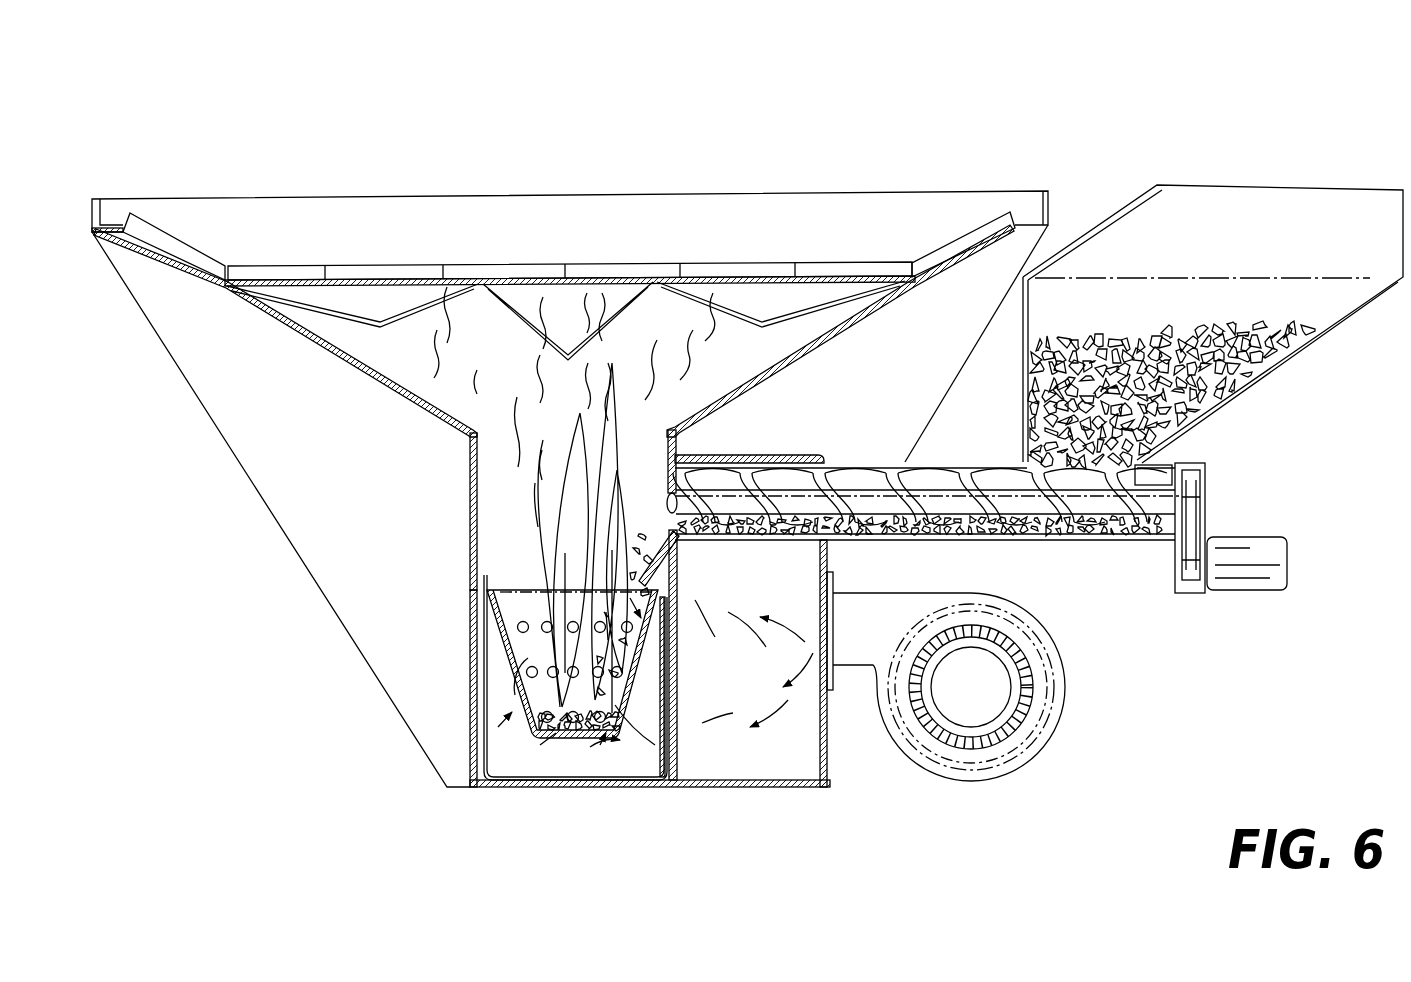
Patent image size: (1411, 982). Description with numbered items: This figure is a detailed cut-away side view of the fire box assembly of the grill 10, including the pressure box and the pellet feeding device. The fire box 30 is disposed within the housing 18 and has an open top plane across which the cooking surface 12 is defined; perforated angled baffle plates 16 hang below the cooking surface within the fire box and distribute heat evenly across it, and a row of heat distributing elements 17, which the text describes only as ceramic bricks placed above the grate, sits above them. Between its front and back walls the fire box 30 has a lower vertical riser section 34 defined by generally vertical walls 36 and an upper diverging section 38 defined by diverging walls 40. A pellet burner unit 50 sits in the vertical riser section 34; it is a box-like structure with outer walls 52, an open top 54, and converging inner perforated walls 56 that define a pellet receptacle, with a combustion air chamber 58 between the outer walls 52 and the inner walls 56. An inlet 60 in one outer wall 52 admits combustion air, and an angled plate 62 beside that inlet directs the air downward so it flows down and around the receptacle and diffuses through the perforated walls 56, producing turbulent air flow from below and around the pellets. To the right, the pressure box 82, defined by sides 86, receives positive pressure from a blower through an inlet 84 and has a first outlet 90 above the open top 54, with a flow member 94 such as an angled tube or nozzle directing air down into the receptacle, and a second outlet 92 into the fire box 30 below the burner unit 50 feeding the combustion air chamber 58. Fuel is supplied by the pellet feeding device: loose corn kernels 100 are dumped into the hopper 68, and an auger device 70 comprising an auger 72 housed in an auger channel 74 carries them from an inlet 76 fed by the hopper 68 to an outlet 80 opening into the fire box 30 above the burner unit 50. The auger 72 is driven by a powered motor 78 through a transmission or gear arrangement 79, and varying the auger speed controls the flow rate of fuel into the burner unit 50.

The grill 10 is at (800, 92).
The cooking surface 12 is at (541, 195).
The perforated angled baffle plates 16 is at (315, 310).
The grate tiles 17 is at (745, 268).
The housing 18 is at (203, 408).
The fire box 30 is at (406, 443).
The vertical riser section 34 is at (500, 535).
The vertical walls 36 is at (470, 507).
The diverging section 38 is at (410, 368).
The diverging walls 40 is at (818, 343).
The pellet burner unit 50 is at (460, 683).
The outer walls 52 is at (480, 712).
The open top 54 is at (488, 595).
The converging inner perforated walls 56 is at (625, 738).
The combustion air chamber 58 is at (542, 758).
The inlet 60 is at (645, 778).
The angled plate 62 is at (665, 742).
The hopper 68 is at (1240, 222).
The auger device 70 is at (1100, 548).
The auger 72 is at (948, 485).
The auger channel 74 is at (1120, 527).
The inlet 76 is at (1160, 462).
The powered motor 78 is at (1233, 588).
The transmission or gear arrangement 79 is at (1192, 498).
The outlet 80 is at (667, 483).
The pressure box 82 is at (800, 787).
The inlet 84 is at (833, 605).
The sides 86 is at (827, 743).
The first outlet 90 is at (688, 555).
The second outlet 92 is at (688, 720).
The flow member 94 is at (752, 583).
The corn kernels 100 is at (1255, 402).